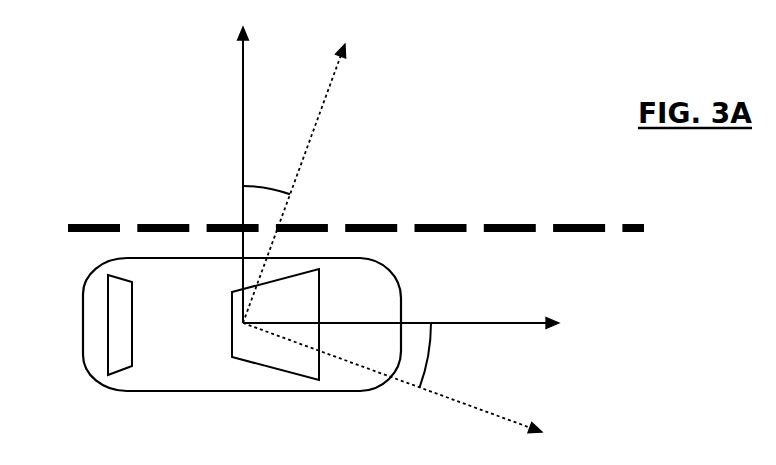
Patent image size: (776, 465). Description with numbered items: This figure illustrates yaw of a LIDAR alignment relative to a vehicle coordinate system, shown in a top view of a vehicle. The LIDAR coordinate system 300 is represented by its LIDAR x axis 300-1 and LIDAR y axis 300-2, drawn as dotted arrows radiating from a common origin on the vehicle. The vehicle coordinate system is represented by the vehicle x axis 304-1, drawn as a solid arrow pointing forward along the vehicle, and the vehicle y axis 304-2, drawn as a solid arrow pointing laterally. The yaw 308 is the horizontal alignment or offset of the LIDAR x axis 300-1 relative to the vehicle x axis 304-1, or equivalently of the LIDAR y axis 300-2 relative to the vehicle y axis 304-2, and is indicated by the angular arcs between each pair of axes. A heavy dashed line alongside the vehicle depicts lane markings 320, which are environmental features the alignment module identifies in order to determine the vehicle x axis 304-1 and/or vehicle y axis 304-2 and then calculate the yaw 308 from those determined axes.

The LIDAR coordinate system 300 is at (242, 324).
The LIDAR x axis 300-1 is at (500, 418).
The LIDAR y axis 300-2 is at (322, 110).
The vehicle x axis 304-1 is at (510, 323).
The vehicle y axis 304-2 is at (242, 93).
The yaw 308 is at (298, 177).
The lane markings 320 is at (508, 225).